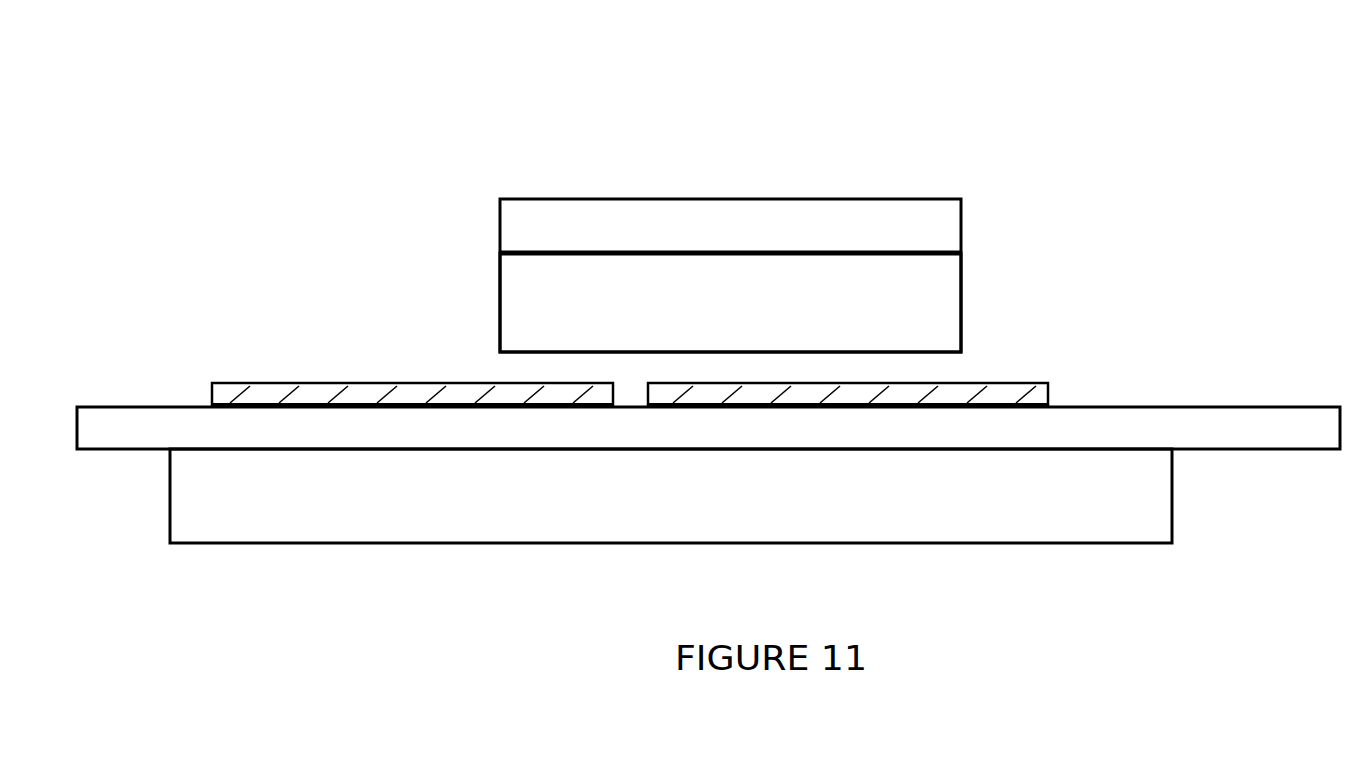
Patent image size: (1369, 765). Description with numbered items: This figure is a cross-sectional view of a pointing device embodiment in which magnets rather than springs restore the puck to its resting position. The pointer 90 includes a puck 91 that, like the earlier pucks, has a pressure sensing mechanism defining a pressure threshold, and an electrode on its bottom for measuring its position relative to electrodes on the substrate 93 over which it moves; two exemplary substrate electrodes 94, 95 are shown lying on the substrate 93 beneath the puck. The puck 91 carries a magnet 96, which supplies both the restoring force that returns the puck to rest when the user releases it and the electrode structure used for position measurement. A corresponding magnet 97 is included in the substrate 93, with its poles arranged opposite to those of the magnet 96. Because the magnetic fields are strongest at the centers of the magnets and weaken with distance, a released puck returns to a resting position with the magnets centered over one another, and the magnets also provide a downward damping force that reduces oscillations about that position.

The pointer 90 is at (198, 121).
The puck 91 is at (885, 218).
The substrate 93 is at (1307, 418).
The substrate electrode 94 is at (245, 392).
The substrate electrode 95 is at (1048, 393).
The magnet 96 is at (962, 318).
The corresponding magnet 97 is at (1108, 532).